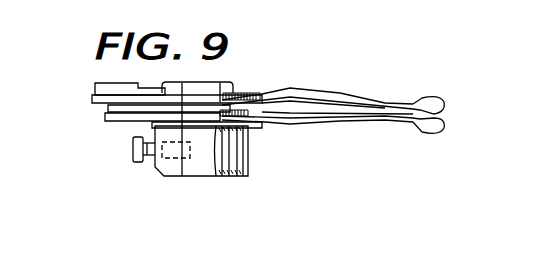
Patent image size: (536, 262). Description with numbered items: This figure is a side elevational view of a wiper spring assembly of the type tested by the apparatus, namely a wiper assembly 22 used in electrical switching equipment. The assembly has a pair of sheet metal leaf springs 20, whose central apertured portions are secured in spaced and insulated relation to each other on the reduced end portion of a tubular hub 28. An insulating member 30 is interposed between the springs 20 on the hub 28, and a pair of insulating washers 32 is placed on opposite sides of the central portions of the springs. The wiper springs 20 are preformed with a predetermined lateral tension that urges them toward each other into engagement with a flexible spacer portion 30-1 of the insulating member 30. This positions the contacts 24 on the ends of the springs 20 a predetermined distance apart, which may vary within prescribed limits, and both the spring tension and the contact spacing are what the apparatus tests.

The leaf spring 20 is at (284, 95).
The wiper assembly 22 is at (350, 103).
The contact 24 is at (442, 122).
The tubular hub 28 is at (200, 160).
The insulating member 30 is at (163, 113).
The flexible spacer portion 30-1 is at (277, 116).
The insulating washer 32 is at (222, 94).